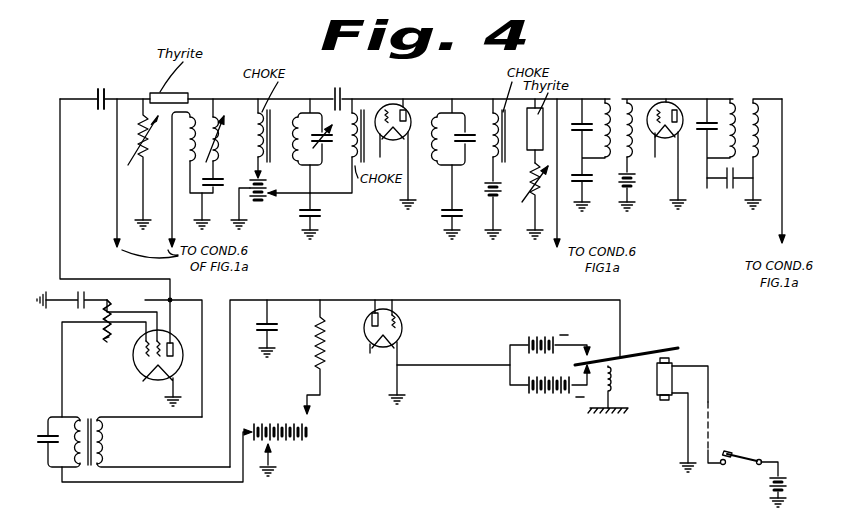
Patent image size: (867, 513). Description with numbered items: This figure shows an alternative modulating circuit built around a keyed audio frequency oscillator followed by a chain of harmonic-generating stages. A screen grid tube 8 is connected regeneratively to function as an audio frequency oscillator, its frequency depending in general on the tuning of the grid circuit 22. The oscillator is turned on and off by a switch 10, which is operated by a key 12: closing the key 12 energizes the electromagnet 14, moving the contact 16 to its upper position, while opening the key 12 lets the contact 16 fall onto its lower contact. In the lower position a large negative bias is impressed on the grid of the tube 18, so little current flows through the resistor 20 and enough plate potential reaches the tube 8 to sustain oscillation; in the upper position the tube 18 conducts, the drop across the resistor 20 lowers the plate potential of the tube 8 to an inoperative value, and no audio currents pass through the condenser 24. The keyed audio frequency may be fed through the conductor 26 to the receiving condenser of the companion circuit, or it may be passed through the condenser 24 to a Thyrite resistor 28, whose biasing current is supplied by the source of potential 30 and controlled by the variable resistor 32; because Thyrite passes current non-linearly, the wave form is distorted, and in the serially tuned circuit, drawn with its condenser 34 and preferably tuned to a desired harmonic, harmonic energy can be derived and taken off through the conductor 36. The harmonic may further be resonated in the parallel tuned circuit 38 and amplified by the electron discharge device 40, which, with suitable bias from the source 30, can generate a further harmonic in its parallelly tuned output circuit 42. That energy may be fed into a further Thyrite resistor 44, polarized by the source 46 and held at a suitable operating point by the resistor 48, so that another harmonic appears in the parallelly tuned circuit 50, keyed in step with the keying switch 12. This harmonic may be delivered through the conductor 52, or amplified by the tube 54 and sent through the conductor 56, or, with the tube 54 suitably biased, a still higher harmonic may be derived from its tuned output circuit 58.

The screen grid tube 8 is at (176, 345).
The switch 10 is at (679, 348).
The key 12 is at (736, 463).
The electromagnet 14 is at (674, 380).
The contact 16 is at (577, 363).
The tube 18 is at (385, 308).
The resistor 20 is at (327, 370).
The grid circuit 22 is at (56, 420).
The condenser 24 is at (102, 90).
The conductor 26 is at (116, 163).
The Thyrite resistor 28 is at (173, 92).
The source of potential 30 is at (255, 180).
The variable resistor 32 is at (142, 167).
The condenser 34 is at (217, 184).
The conductor 36 is at (171, 216).
The parallel tuned circuit 38 is at (312, 113).
The electron discharge device 40 is at (396, 104).
The parallelly tuned output circuit 42 is at (460, 113).
The Thyrite resistor 44 is at (529, 140).
The source 46 is at (500, 191).
The resistor 48 is at (530, 200).
The parallelly tuned circuit 50 is at (597, 102).
The conductor 52 is at (557, 167).
The tube 54 is at (668, 102).
The conductor 56 is at (784, 200).
The output circuit 58 is at (719, 102).